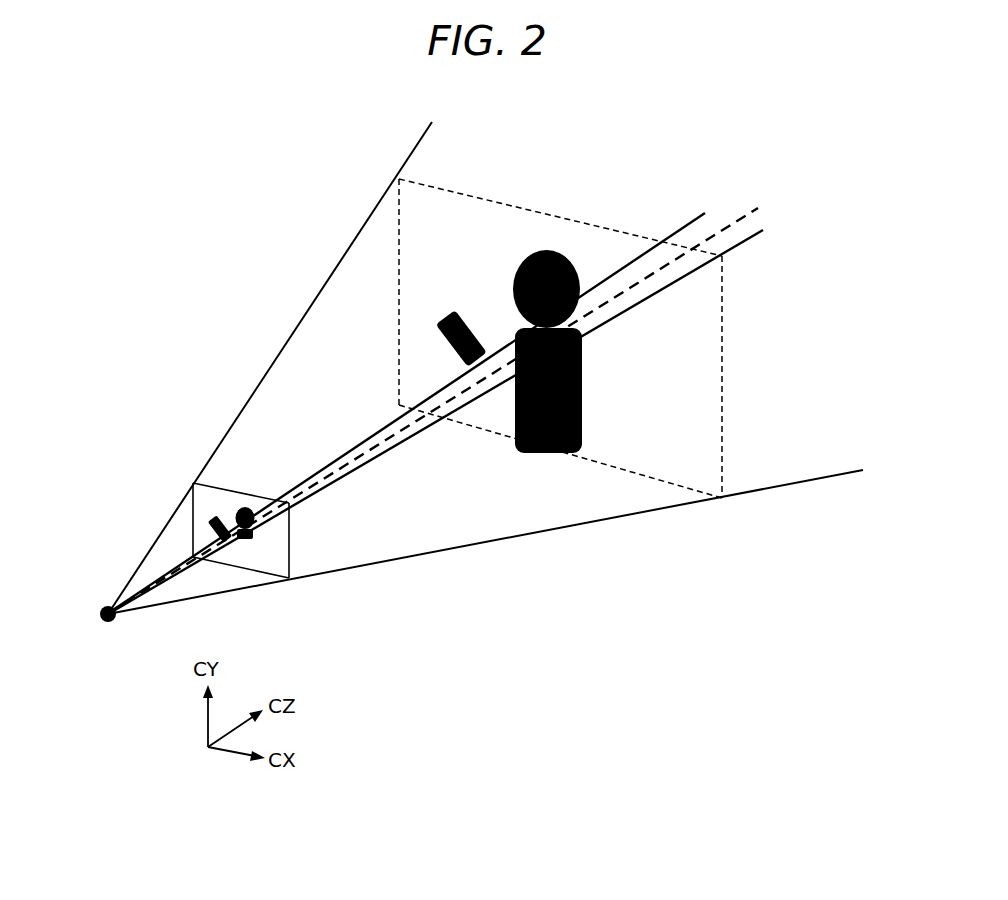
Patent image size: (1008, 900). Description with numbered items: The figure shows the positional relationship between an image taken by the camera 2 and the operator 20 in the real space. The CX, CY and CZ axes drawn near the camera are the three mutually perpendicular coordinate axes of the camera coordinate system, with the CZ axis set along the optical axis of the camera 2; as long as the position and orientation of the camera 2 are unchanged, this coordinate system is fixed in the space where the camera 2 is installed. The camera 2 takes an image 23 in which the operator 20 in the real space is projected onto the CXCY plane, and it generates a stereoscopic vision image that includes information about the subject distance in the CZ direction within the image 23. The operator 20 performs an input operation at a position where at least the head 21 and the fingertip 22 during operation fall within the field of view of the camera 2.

The camera 2 is at (108, 622).
The operator 20 is at (577, 309).
The head 21 is at (552, 250).
The fingertip 22 is at (462, 305).
The image 23 is at (244, 494).